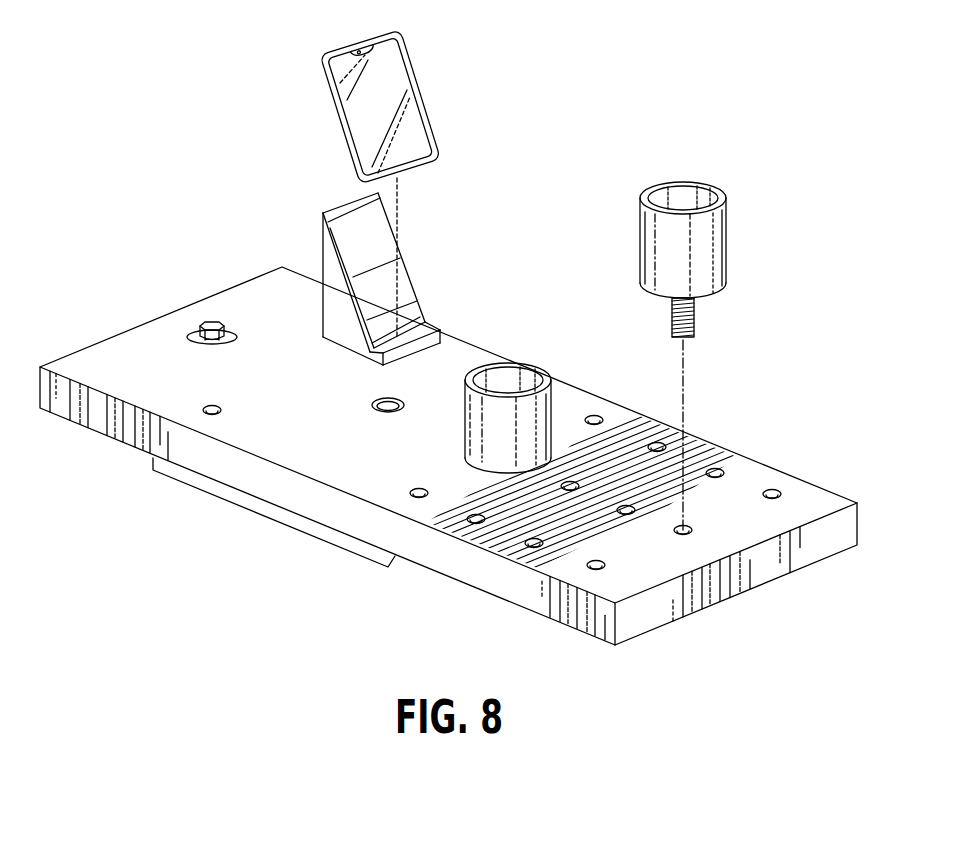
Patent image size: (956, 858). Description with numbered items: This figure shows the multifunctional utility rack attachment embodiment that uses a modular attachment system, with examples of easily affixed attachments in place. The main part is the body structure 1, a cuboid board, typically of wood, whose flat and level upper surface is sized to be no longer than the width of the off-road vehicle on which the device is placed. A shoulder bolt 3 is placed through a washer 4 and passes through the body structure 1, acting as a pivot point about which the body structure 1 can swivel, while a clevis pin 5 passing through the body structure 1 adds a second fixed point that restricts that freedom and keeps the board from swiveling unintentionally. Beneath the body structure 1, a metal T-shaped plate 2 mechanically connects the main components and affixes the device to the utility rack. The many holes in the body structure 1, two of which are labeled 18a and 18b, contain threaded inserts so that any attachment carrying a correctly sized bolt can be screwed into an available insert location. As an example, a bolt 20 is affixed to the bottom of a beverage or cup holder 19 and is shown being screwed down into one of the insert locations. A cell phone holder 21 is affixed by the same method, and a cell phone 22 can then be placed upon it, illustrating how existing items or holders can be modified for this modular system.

The body structure 1 is at (472, 348).
The metal T-shaped plate 2 is at (273, 512).
The shoulder bolt 3 is at (213, 325).
The washer 4 is at (193, 328).
The clevis pin 5 is at (378, 415).
The insert location 18a is at (773, 488).
The insert location 18b is at (695, 532).
The beverage or cup holder 19 is at (555, 415).
The bolt 20 is at (696, 311).
The cell phone holder 21 is at (323, 218).
The cell phone 22 is at (417, 80).